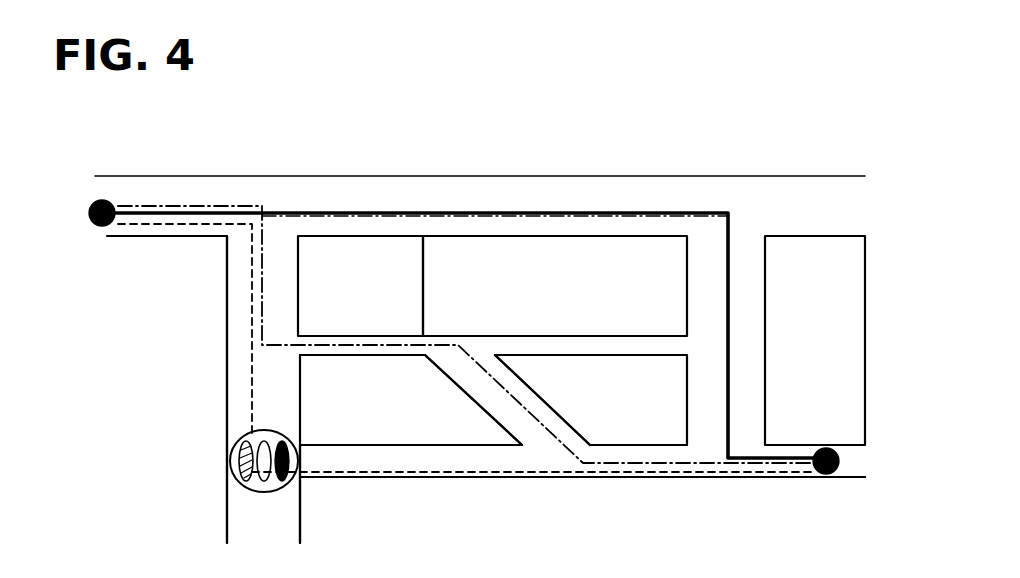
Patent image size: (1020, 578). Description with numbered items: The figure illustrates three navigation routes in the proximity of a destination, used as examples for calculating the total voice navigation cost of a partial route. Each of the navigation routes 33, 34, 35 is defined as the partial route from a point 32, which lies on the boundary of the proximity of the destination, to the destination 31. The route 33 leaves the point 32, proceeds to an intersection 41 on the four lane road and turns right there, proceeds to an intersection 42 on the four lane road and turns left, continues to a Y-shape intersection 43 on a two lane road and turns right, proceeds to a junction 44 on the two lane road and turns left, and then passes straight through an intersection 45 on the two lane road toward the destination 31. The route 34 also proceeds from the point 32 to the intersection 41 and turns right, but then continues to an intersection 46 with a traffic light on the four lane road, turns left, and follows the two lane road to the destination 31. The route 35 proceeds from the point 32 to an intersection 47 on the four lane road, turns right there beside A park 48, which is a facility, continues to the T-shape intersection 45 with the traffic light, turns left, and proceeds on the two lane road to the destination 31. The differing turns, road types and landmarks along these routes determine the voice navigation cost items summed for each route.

The destination 31 is at (826, 449).
The point 32 is at (88, 222).
The navigation route 33 is at (340, 346).
The navigation route 34 is at (252, 412).
The navigation route 35 is at (678, 211).
The intersection 41 is at (285, 193).
The intersection 42 is at (240, 337).
The Y-shape intersection 43 is at (455, 352).
The junction 44 is at (548, 453).
The intersection 45 is at (721, 480).
The intersection 46 is at (246, 490).
The intersection 47 is at (747, 193).
The A park 48 is at (579, 262).